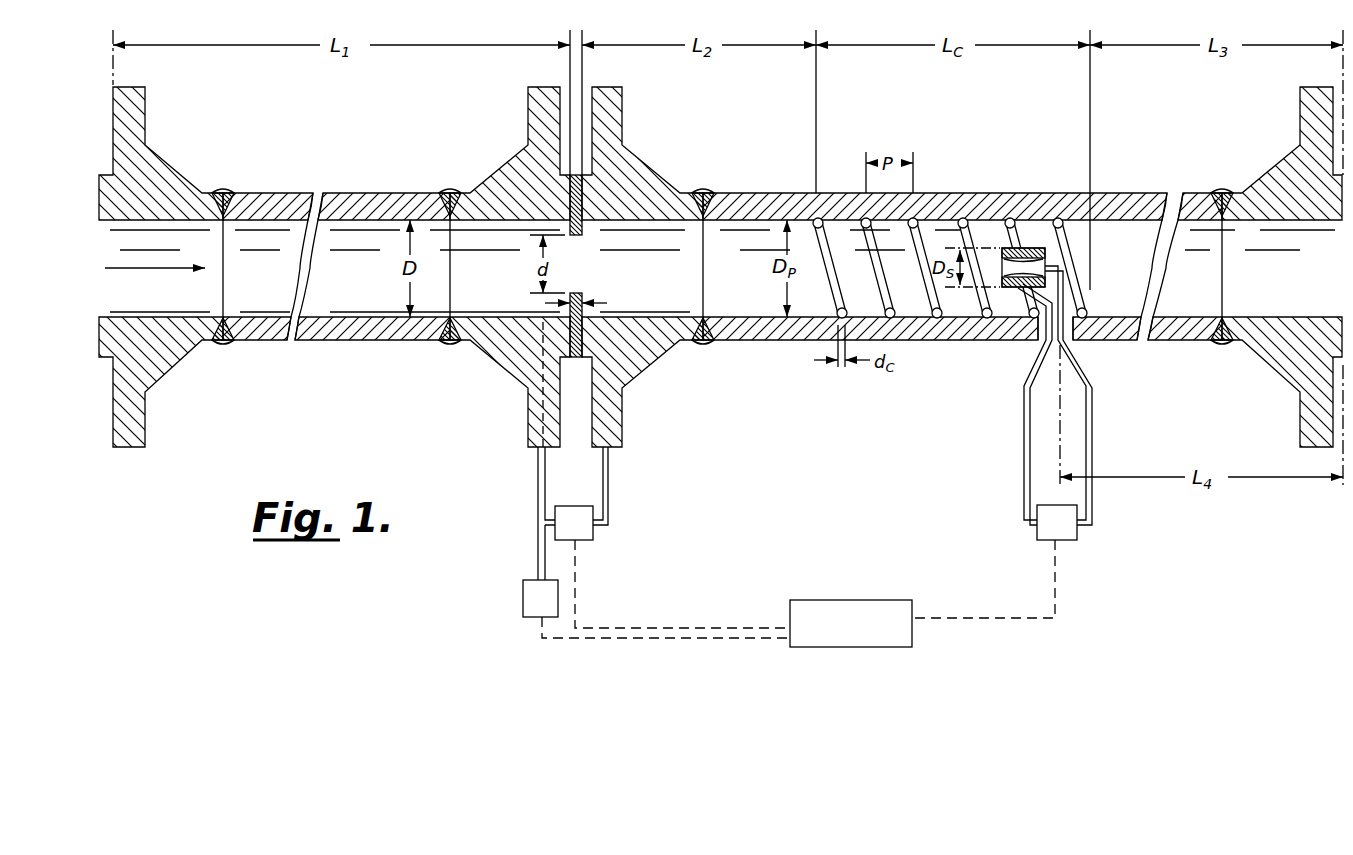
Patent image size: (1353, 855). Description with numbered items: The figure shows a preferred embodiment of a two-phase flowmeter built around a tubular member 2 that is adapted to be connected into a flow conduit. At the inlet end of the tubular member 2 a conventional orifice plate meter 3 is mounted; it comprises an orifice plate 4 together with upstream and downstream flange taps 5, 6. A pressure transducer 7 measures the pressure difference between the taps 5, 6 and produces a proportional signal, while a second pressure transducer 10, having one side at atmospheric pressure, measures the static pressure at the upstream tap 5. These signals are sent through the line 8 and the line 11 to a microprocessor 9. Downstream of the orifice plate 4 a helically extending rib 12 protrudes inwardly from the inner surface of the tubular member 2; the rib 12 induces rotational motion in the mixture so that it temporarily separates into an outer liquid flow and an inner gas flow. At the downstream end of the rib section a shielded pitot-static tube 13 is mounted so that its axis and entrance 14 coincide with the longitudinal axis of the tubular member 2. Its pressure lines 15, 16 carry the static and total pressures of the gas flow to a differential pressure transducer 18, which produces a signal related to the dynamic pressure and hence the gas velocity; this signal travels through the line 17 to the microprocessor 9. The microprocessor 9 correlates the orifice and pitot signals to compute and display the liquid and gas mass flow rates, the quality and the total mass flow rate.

The tubular member 2 is at (352, 341).
The orifice plate meter 3 is at (584, 96).
The orifice plate 4 is at (586, 296).
The upstream flange tap 5 is at (538, 449).
The downstream flange tap 6 is at (608, 449).
The pressure transducer 7 is at (593, 539).
The line 8 is at (742, 628).
The microprocessor 9 is at (862, 636).
The pressure transducer 10 is at (523, 596).
The line 11 is at (542, 637).
The helically extending rib 12 is at (891, 298).
The shielded pitot-static tube 13 is at (1006, 289).
The entrance 14 is at (1030, 248).
The pressure line 15 is at (1040, 345).
The pressure line 16 is at (1065, 345).
The line 17 is at (1057, 601).
The differential pressure transducer 18 is at (1076, 538).